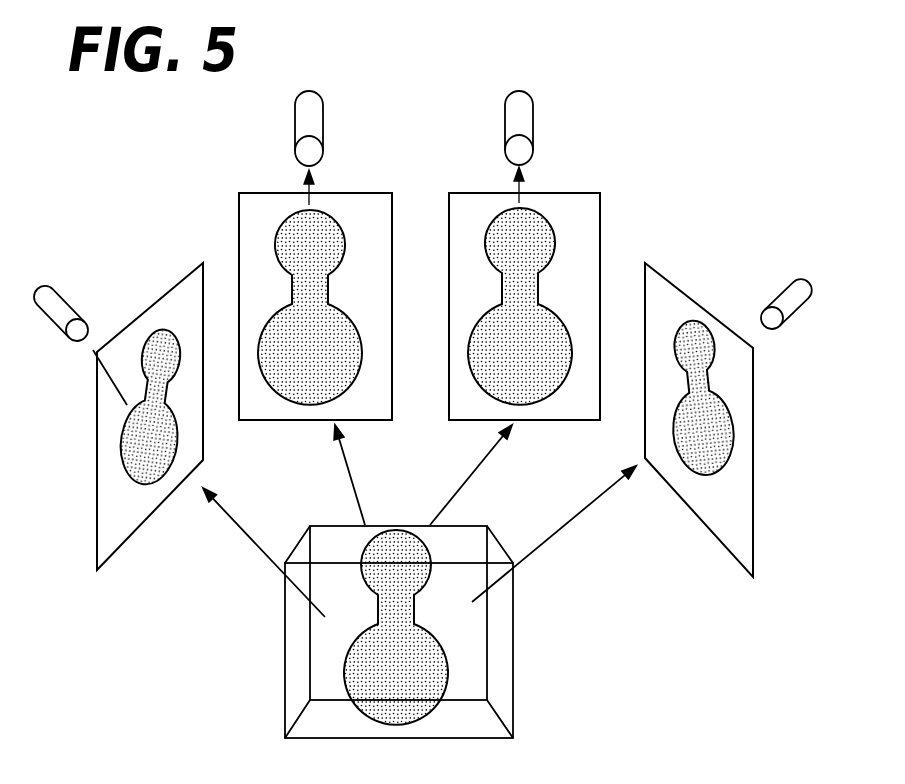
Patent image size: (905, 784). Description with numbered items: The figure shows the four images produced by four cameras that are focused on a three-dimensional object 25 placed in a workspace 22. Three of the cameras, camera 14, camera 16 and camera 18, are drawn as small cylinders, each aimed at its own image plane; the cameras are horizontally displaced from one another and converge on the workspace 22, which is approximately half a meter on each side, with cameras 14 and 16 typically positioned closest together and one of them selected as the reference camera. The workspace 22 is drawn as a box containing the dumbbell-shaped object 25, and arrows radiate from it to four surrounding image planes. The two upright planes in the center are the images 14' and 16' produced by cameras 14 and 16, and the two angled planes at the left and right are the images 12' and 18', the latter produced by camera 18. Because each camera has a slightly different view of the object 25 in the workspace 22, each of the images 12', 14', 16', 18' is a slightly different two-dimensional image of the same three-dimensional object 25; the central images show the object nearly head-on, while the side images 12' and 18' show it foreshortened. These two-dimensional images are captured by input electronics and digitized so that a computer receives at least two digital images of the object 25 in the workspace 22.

The camera 14 is at (200, 238).
The camera 16 is at (543, 118).
The camera 18 is at (786, 288).
The image 12' is at (122, 419).
The image 14' is at (314, 322).
The image 16' is at (528, 315).
The image 18' is at (733, 420).
The workspace 22 is at (513, 688).
The three-dimensional object 25 is at (435, 717).